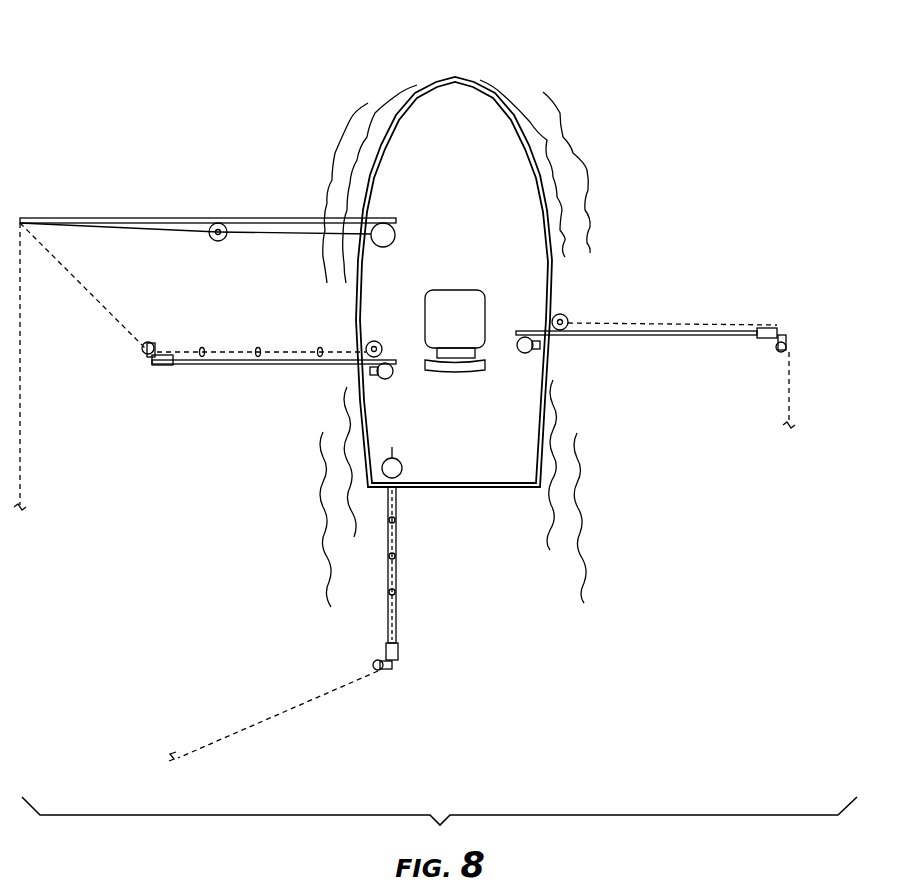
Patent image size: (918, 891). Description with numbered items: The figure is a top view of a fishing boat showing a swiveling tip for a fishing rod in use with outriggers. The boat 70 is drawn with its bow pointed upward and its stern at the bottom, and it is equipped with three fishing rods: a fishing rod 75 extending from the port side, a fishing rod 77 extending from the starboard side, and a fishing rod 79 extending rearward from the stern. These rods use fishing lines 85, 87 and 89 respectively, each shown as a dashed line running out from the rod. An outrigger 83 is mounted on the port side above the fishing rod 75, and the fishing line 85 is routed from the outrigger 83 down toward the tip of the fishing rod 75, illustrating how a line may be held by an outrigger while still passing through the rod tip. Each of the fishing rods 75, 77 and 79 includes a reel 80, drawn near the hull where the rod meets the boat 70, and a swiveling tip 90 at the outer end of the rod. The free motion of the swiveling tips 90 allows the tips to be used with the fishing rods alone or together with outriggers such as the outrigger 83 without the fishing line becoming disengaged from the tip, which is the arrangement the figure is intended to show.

The boat 70 is at (462, 80).
The fishing rod 75 is at (218, 365).
The fishing rod 77 is at (622, 336).
The fishing rod 79 is at (396, 590).
The reel 80 is at (386, 377).
The outrigger 83 is at (113, 218).
The fishing line 85 is at (78, 283).
The fishing line 87 is at (650, 323).
The fishing line 89 is at (325, 695).
The swiveling tip 90 is at (146, 357).